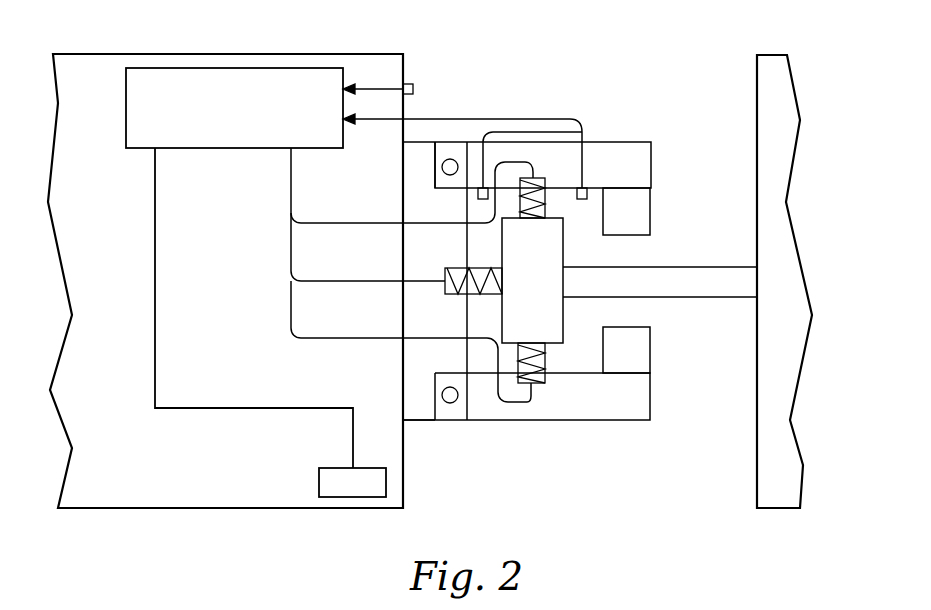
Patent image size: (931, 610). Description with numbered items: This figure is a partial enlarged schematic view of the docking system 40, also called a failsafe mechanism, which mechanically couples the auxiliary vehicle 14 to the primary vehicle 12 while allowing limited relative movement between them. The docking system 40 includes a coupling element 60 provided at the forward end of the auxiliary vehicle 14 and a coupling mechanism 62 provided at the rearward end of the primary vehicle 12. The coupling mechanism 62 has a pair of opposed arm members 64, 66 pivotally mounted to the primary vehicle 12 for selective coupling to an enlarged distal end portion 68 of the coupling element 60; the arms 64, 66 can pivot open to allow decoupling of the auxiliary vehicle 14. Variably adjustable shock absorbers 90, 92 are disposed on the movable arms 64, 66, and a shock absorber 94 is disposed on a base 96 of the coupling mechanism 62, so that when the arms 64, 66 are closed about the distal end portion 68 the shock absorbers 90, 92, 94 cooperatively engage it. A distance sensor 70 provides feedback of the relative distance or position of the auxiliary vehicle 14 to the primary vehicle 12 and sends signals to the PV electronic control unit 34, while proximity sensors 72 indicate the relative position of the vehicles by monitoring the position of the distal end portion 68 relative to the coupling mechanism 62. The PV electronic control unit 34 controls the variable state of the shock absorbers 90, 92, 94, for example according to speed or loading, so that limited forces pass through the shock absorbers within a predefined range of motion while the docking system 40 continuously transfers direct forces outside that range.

The primary vehicle 12 is at (118, 483).
The auxiliary vehicle 14 is at (778, 90).
The PV electronic control unit 34 is at (260, 148).
The docking system 40 is at (518, 440).
The coupling element 60 is at (586, 283).
The coupling mechanism 62 is at (618, 144).
The arm member 64 is at (627, 395).
The arm member 66 is at (645, 170).
The enlarged distal end portion 68 is at (537, 267).
The distance sensor 70 is at (413, 85).
The proximity sensor 72 is at (478, 197).
The shock absorber 90 is at (546, 385).
The shock absorber 92 is at (556, 178).
The shock absorber 94 is at (460, 295).
The base 96 is at (415, 393).